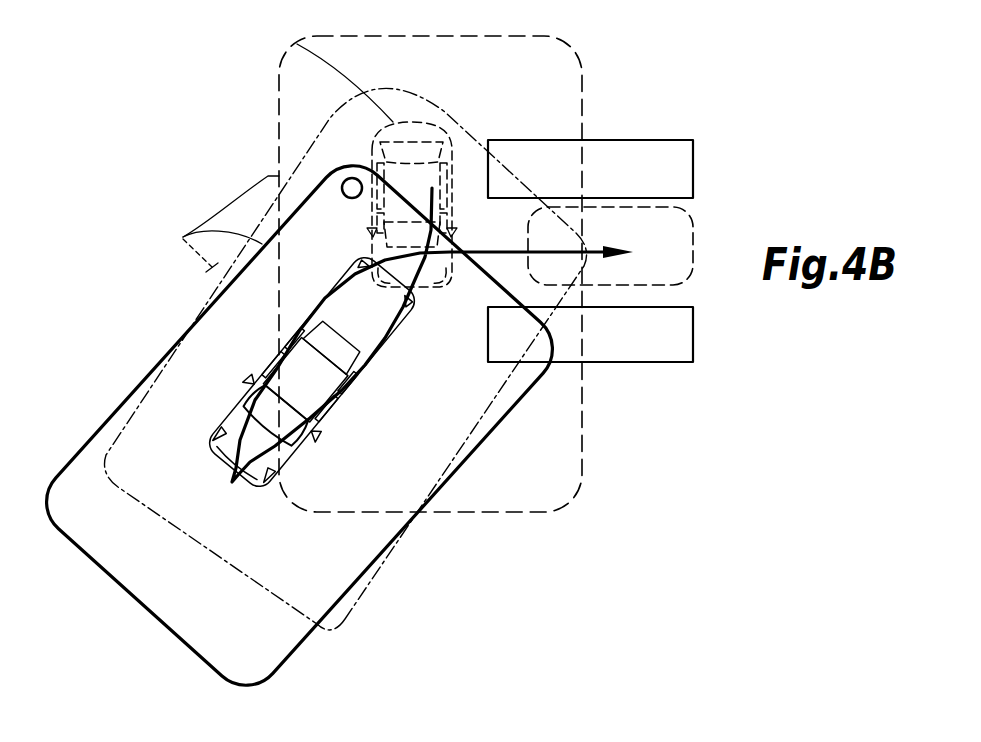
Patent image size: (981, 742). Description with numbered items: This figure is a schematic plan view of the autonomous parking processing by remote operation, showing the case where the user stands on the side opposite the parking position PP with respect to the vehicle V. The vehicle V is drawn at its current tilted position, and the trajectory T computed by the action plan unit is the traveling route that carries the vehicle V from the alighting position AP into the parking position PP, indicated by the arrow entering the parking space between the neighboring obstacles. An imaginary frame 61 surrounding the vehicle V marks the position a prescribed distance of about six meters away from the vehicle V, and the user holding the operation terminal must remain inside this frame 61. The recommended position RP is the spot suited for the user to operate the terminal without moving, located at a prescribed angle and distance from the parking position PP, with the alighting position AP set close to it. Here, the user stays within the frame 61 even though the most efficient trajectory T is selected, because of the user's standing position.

The imaginary frame 61 is at (184, 237).
The alighting position AP is at (313, 37).
The recommended position RP is at (346, 174).
The parking position PP is at (697, 242).
The trajectory T is at (298, 343).
The vehicle V is at (216, 467).
The element user is at (342, 188).